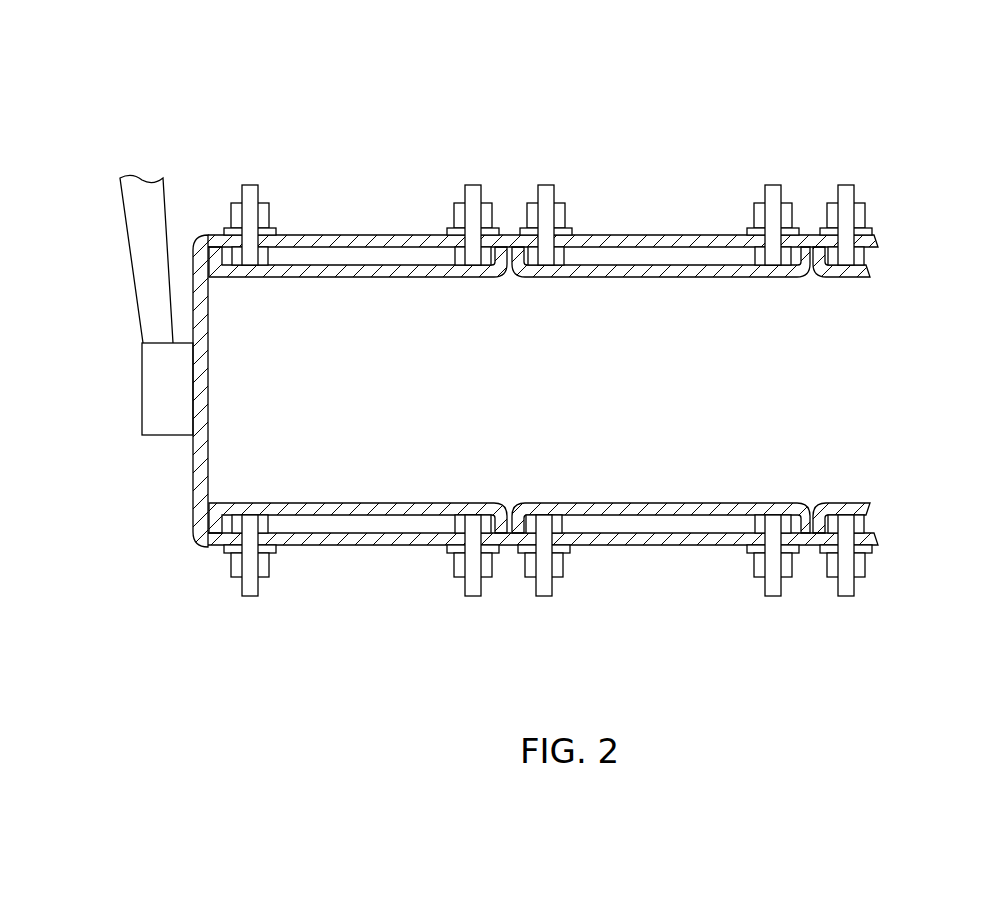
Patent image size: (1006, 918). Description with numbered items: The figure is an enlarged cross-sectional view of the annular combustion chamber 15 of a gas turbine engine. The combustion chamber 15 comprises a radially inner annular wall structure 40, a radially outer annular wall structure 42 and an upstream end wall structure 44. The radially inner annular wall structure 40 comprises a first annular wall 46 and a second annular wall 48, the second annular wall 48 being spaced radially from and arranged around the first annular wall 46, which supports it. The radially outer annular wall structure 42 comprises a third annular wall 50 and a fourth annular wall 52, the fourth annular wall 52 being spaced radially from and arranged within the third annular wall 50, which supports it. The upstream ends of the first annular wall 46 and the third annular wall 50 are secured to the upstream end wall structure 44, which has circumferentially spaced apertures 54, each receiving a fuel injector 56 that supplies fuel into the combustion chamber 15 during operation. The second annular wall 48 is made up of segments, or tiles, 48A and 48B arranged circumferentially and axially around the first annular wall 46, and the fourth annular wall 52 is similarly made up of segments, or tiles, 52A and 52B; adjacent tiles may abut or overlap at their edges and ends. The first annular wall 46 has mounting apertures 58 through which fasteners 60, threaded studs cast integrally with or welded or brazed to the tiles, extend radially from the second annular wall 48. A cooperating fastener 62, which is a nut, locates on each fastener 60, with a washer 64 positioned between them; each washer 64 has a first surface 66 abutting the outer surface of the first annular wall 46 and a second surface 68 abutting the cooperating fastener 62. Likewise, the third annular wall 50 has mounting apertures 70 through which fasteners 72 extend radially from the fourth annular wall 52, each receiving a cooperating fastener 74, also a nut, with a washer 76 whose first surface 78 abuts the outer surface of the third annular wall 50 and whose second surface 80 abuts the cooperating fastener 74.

The combustion chamber 15 is at (728, 150).
The radially inner annular wall structure 40 is at (900, 493).
The radially outer annular wall structure 42 is at (903, 240).
The upstream end wall structure 44 is at (200, 480).
The first annular wall 46 is at (700, 547).
The second annular wall 48 is at (746, 503).
The segment, or tile 48A is at (370, 503).
The segment, or tile 48B is at (633, 503).
The third annular wall 50 is at (738, 236).
The fourth annular wall 52 is at (742, 278).
The segment, or tile 52A is at (395, 278).
The segment, or tile 52B is at (640, 278).
The aperture 54 is at (208, 352).
The fuel injector 56 is at (150, 395).
The mounting aperture 58 is at (265, 530).
The fastener 60 is at (260, 594).
The cooperating fastener 62 is at (226, 556).
The washer 64 is at (226, 546).
The first surface 66 is at (803, 530).
The second surface 68 is at (793, 556).
The mounting aperture 70 is at (265, 256).
The fastener 72 is at (248, 186).
The cooperating fastener 74 is at (270, 216).
The washer 76 is at (226, 228).
The first surface 78 is at (795, 255).
The second surface 80 is at (792, 205).